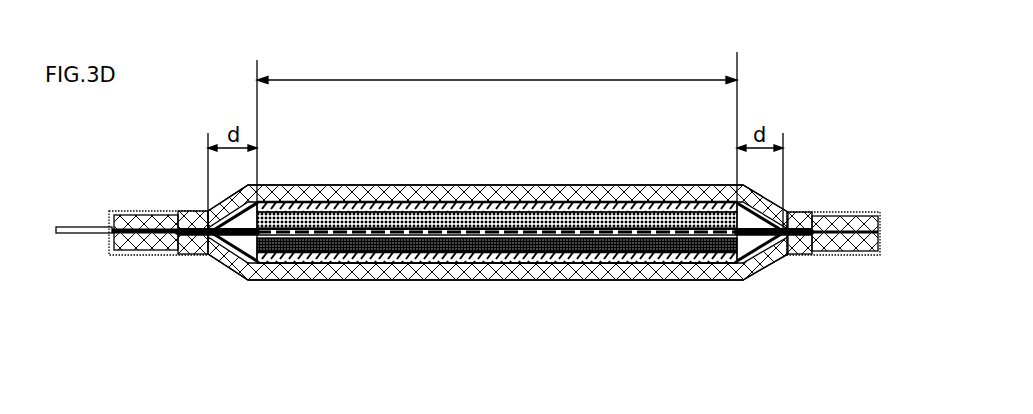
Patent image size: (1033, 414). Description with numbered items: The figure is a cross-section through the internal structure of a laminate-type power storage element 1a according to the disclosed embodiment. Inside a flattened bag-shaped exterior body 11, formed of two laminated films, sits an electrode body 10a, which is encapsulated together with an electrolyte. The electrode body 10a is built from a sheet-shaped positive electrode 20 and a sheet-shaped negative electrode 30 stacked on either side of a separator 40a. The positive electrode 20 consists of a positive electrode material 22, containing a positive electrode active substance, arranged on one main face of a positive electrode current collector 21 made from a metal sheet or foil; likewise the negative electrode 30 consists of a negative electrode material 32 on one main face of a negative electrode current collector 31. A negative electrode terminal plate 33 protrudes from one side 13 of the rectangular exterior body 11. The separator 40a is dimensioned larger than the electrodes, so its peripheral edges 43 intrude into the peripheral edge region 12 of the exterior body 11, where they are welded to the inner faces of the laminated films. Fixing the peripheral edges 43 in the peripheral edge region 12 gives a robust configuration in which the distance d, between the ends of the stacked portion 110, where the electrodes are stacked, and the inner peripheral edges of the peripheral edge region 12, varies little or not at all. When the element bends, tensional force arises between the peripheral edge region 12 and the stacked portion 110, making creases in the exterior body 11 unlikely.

The laminate-type power storage element 1a is at (757, 95).
The electrode body 10a is at (245, 282).
The exterior body 11 is at (665, 185).
The peripheral edge region 12 is at (837, 212).
The one side 13 is at (308, 3).
The positive electrode 20 is at (503, 324).
The positive electrode current collector 21 is at (658, 258).
The positive electrode material 22 is at (697, 253).
The negative electrode 30 is at (497, 158).
The negative electrode current collector 31 is at (338, 209).
The negative electrode material 32 is at (373, 222).
The negative electrode terminal plate 33 is at (78, 227).
The separator 40a is at (765, 242).
The peripheral edges 43 is at (190, 206).
The stacked portion 110 is at (563, 80).